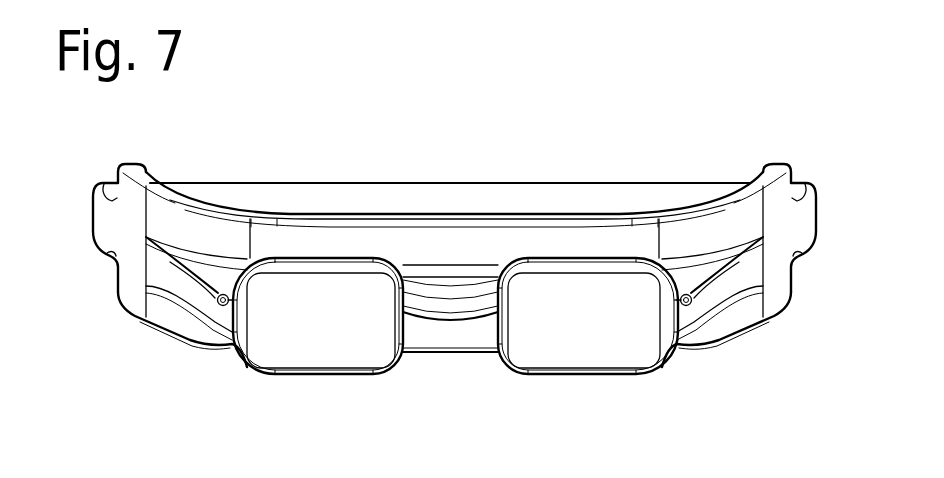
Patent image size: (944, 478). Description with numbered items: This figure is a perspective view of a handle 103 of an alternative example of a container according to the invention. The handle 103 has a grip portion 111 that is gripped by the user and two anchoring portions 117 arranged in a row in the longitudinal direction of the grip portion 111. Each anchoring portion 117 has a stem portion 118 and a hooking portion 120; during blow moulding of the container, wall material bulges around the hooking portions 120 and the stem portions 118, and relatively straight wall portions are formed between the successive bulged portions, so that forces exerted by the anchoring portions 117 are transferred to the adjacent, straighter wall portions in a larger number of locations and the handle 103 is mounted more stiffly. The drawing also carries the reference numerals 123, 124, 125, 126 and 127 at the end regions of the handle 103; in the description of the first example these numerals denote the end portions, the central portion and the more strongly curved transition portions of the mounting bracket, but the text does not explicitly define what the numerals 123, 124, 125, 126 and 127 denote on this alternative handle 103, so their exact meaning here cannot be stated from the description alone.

The handle 103 is at (573, 166).
The grip portion 111 is at (510, 193).
The anchoring portions 117 is at (350, 248).
The stem portions 118 is at (217, 277).
The hooking portions 120 is at (300, 257).
The left ear piece 123 is at (120, 237).
The right ear piece 124 is at (782, 235).
The nose bridge 125 is at (458, 252).
The left temple arm 126 is at (185, 230).
The right temple arm 127 is at (717, 228).